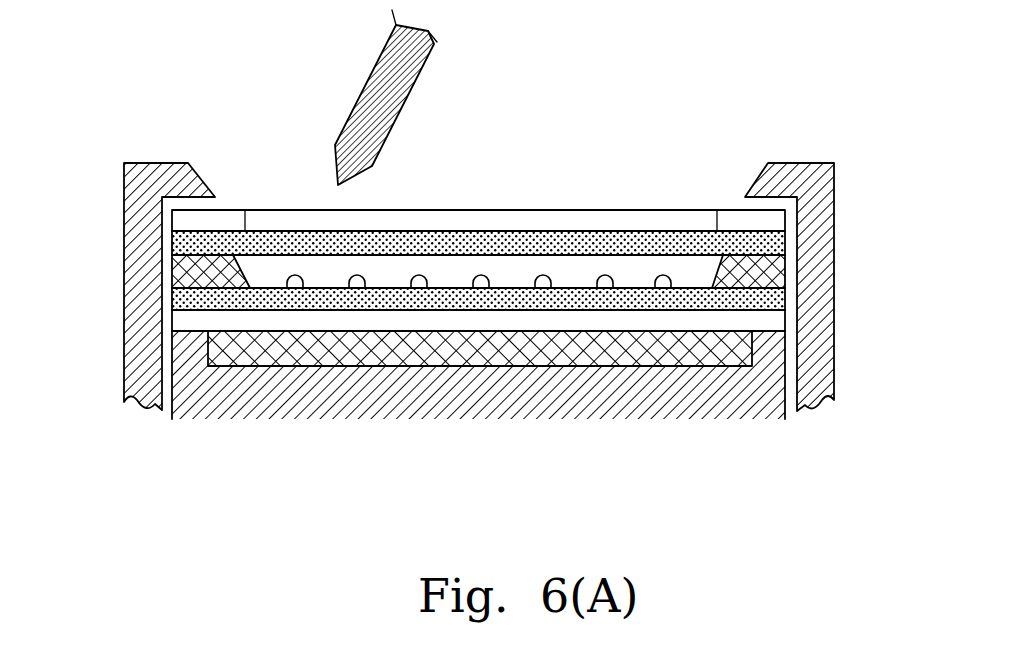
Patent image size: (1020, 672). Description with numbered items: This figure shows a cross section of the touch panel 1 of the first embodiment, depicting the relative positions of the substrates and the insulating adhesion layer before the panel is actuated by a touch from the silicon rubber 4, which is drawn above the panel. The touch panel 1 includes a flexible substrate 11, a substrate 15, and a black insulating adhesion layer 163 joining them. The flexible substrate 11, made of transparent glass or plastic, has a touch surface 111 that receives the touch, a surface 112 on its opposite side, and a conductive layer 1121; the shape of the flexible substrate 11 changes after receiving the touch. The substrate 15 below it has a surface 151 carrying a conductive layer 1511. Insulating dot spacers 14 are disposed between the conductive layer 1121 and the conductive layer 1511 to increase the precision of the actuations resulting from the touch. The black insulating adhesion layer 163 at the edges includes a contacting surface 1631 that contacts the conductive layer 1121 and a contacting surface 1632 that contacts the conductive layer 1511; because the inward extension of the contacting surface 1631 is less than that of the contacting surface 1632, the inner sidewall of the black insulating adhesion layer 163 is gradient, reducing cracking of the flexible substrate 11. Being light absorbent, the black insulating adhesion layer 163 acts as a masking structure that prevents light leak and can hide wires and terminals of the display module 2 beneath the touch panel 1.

The touch panel 1 is at (85, 225).
The flexible substrate 11 is at (460, 184).
The touch surface 111 is at (727, 208).
The surface 112 is at (450, 240).
The conductive layer 1121 is at (608, 243).
The substrate 15 is at (436, 396).
The surface 151 is at (582, 290).
The conductive layer 1511 is at (543, 295).
The insulating dot spacers 14 is at (418, 284).
The black insulating adhesion layer 163 is at (532, 275).
The contacting surface 1631 is at (770, 250).
The contacting surface 1632 is at (768, 285).
The display module 2 is at (718, 385).
The silicon rubber 4 is at (380, 103).